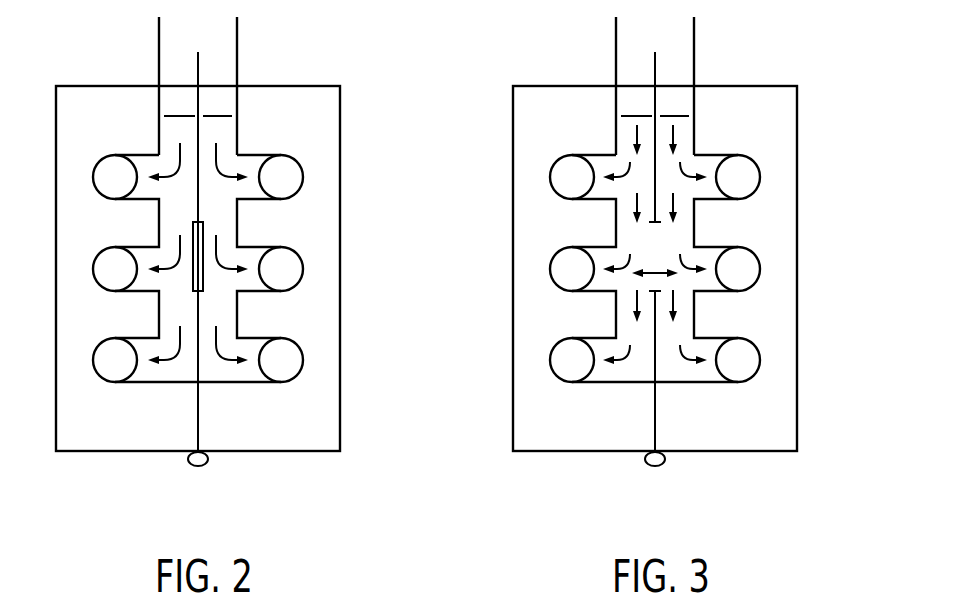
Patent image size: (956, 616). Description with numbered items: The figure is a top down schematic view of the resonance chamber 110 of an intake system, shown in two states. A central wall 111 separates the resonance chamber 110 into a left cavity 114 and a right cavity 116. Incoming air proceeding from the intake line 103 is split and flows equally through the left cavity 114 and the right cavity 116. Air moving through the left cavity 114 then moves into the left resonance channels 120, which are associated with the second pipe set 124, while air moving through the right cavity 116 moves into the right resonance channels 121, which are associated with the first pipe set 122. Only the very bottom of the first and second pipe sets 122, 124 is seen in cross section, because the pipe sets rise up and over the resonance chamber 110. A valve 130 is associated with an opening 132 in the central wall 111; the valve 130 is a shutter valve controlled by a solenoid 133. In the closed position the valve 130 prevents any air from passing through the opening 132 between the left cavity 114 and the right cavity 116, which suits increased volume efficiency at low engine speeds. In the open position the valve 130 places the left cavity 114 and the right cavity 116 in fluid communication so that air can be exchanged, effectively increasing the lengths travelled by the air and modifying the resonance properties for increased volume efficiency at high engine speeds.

In FIG. 2, the intake line 103 is at (158, 35).
In FIG. 3, the intake line 103 is at (585, 86).
In FIG. 2, the resonance chamber 110 is at (340, 275).
In FIG. 3, the resonance chamber 110 is at (689, 268).
In FIG. 2, the central wall 111 is at (199, 67).
In FIG. 3, the central wall 111 is at (696, 245).
In FIG. 2, the left cavity 114 is at (180, 104).
In FIG. 3, the left cavity 114 is at (637, 104).
In FIG. 2, the right cavity 116 is at (218, 104).
In FIG. 3, the right cavity 116 is at (675, 104).
In FIG. 2, the left resonance channels 120 is at (147, 165).
In FIG. 2, the right resonance channels 121 is at (250, 165).
In FIG. 2, the first pipe set 122 is at (288, 196).
In FIG. 2, the second pipe set 124 is at (103, 197).
In FIG. 2, the valve 130 is at (199, 277).
In FIG. 2, the opening 132 is at (180, 285).
In FIG. 2, the solenoid 133 is at (200, 467).
In FIG. 3, the solenoid 133 is at (669, 490).